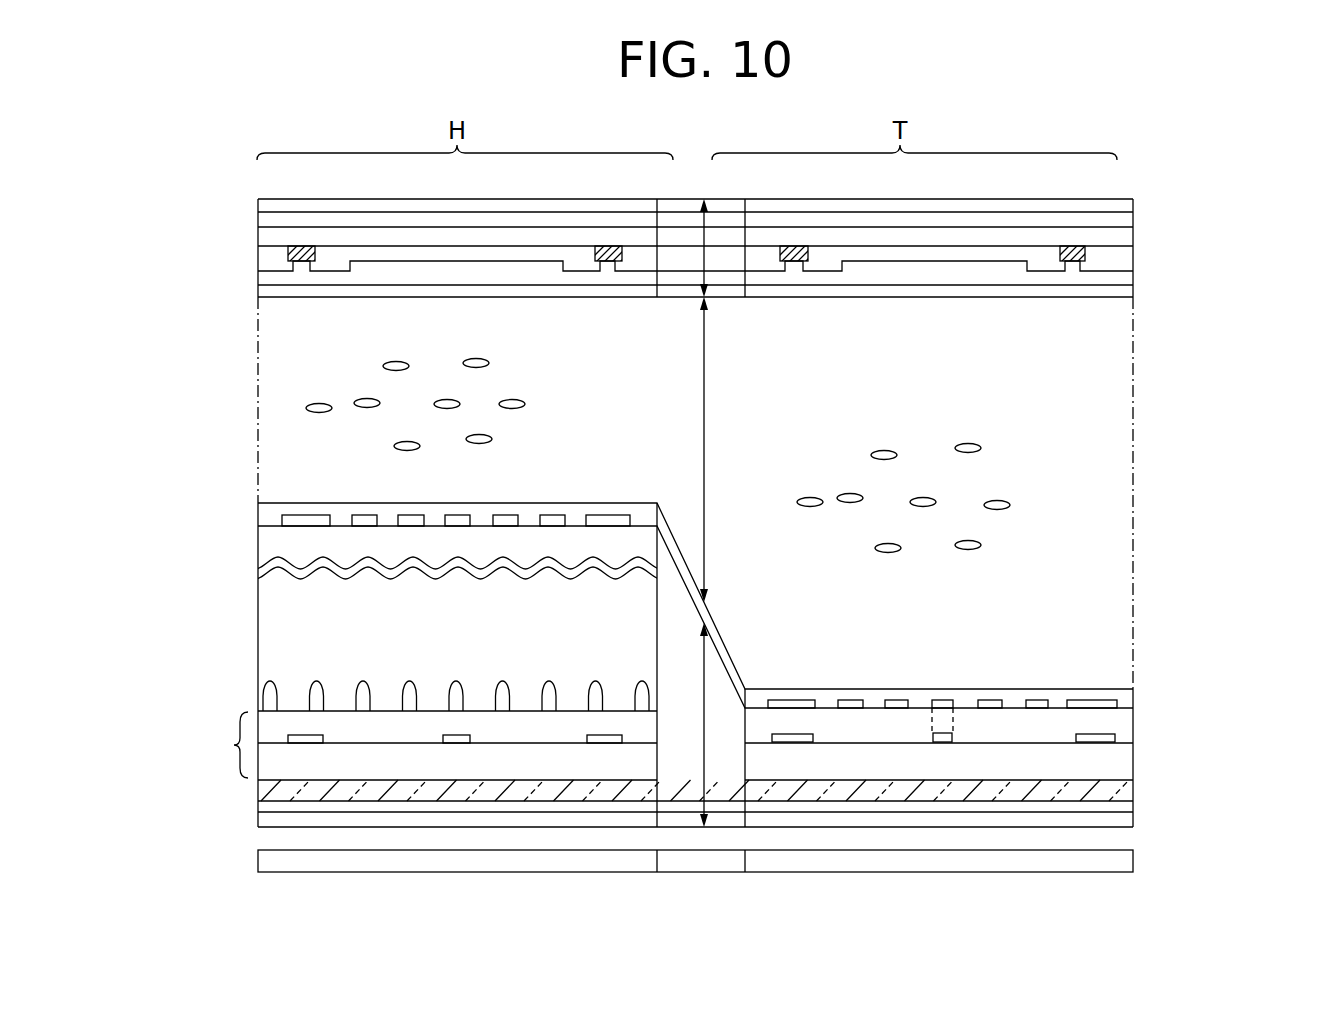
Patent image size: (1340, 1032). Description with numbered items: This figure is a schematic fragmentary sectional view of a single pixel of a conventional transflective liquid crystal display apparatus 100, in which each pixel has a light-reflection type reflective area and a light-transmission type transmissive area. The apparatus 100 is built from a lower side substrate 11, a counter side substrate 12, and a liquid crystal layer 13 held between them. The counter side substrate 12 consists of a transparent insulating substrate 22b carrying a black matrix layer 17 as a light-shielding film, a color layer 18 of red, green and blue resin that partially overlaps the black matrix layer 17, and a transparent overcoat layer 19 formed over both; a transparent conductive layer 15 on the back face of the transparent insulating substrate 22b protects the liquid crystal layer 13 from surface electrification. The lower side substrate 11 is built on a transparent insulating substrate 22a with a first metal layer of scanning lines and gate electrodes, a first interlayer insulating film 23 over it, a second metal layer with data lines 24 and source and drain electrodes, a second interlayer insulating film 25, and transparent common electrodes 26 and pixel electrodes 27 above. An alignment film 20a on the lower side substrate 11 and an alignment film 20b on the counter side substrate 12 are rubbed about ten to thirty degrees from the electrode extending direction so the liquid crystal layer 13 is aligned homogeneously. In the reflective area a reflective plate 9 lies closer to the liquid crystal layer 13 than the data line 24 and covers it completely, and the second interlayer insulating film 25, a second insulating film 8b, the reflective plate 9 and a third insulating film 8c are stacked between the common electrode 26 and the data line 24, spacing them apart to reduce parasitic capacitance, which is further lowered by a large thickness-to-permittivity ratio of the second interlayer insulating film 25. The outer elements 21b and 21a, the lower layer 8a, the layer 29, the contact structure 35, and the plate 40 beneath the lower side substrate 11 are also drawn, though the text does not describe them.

The liquid crystal display apparatus 100 is at (1244, 150).
The upper polarizing plate 21b is at (1118, 204).
The transparent conductive layer 15 is at (1118, 214).
The transparent insulating substrate 22b is at (1118, 235).
The black matrix layer 17 is at (1118, 250).
The color layer 18 is at (1118, 258).
The transparent overcoat layer 19 is at (1118, 267).
The alignment film 20b is at (1118, 277).
The counter side substrate 12 is at (718, 248).
The liquid crystal layer 13 is at (723, 449).
The lower side substrate 11 is at (715, 725).
The alignment film 20a is at (645, 501).
The common electrodes 26 is at (292, 515).
The pixel electrodes 27 is at (361, 515).
The reflective plate 9 is at (590, 562).
The third insulating film 8c is at (258, 545).
The second insulating film 8b is at (262, 631).
The lower layer of step portion 8a is at (221, 745).
The data lines 24 is at (590, 735).
The second interlayer insulating film 25 is at (1125, 730).
The first interlayer insulating film 23 is at (882, 753).
The contact hole 35 is at (945, 742).
The transparent insulating substrate 22a is at (1125, 790).
The lower electrode layer 29 is at (1125, 806).
The lower polarizing plate 21a is at (1128, 819).
The backlight 40 is at (305, 862).